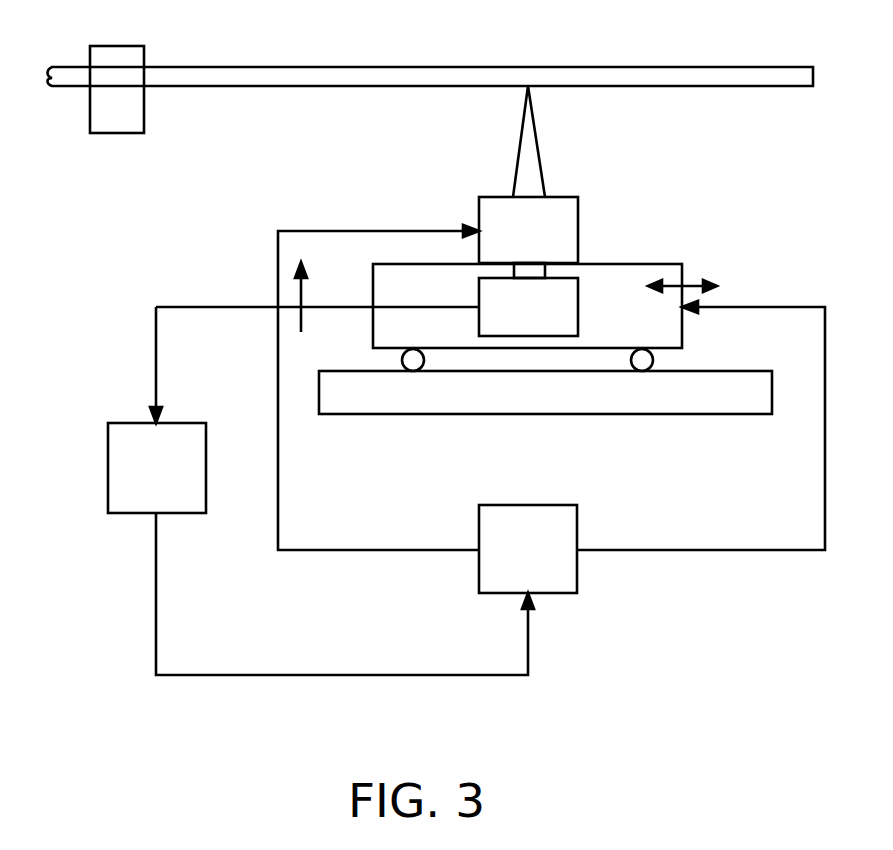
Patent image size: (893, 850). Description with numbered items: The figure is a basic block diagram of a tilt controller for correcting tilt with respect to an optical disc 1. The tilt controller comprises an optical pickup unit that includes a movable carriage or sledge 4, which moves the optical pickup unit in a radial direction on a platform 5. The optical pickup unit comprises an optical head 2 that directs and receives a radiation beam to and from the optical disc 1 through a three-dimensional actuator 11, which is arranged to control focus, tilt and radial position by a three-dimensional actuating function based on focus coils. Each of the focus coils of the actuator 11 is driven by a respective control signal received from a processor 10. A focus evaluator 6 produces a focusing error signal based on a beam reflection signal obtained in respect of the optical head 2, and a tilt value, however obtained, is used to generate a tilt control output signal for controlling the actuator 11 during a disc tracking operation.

The optical disc 1 is at (692, 66).
The optical head 2 is at (578, 307).
The movable carriage or sledge 4 is at (682, 333).
The platform 5 is at (705, 414).
The focus evaluator 6 is at (108, 468).
The processor 10 is at (528, 505).
The 3D actuator 11 is at (578, 231).